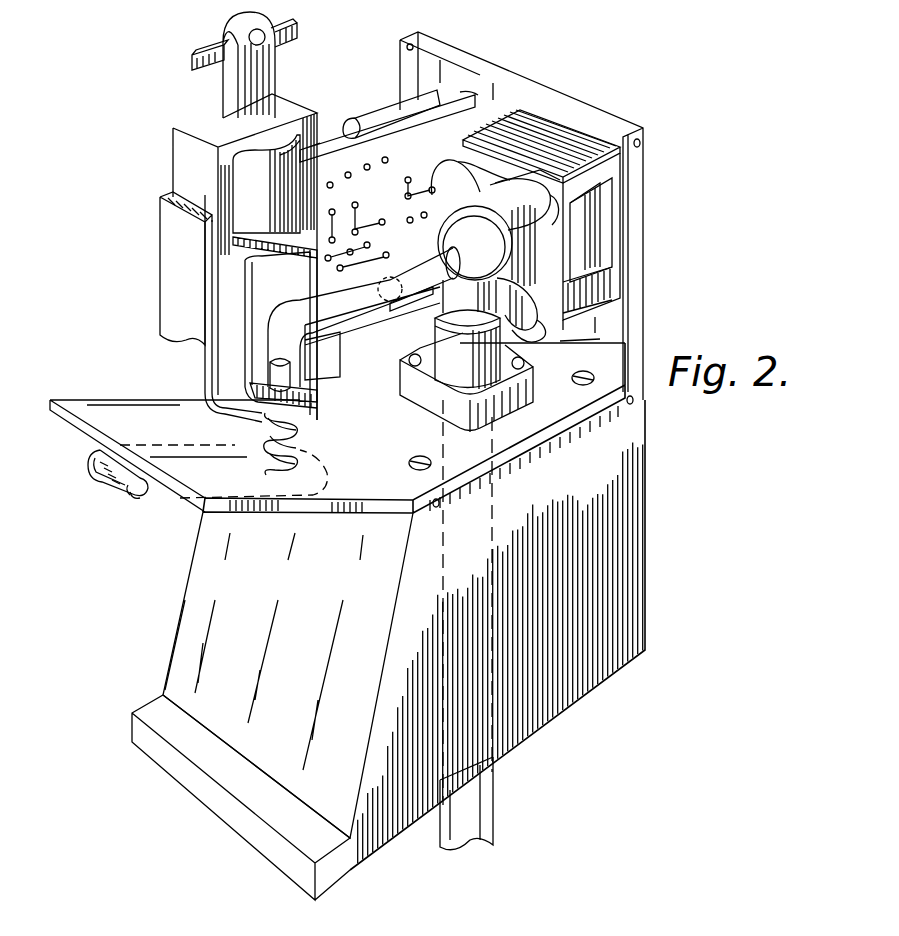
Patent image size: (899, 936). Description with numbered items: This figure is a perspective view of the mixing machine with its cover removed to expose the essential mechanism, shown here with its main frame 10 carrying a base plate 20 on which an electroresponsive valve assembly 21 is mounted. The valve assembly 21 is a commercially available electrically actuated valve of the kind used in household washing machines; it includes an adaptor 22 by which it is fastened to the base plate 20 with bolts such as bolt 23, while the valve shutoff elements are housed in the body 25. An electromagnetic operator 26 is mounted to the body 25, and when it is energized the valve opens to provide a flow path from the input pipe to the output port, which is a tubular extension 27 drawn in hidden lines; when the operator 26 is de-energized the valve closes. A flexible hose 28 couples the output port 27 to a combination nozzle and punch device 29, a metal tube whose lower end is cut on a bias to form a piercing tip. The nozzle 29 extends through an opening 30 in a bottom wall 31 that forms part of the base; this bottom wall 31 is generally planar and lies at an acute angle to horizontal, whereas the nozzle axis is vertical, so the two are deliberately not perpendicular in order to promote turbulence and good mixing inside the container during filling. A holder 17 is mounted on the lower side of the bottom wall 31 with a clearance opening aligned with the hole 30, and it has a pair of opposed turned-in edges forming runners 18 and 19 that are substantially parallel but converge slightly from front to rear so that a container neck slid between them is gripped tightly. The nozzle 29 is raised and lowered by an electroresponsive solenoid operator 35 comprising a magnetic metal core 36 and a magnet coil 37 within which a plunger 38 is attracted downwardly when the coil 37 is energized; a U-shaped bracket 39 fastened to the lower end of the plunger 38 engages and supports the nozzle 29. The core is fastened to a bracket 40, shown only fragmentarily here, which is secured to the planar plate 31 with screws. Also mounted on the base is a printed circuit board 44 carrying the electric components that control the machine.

The back mounting panel 10 is at (635, 245).
The holder 17 is at (85, 486).
The runner 18 is at (135, 496).
The runner 19 is at (113, 478).
The base plate 20 is at (600, 407).
The electroresponsive valve assembly 21 is at (600, 343).
The adaptor 22 is at (437, 400).
The bolt 23 is at (400, 365).
The body 25 is at (497, 190).
The electromagnetic operator 26 is at (580, 143).
The tubular extension 27 is at (494, 251).
The flexible hose 28 is at (300, 318).
The combination nozzle and punch device 29 is at (300, 417).
The opening 30 is at (300, 443).
The bottom wall 31 is at (127, 408).
The electroresponsive solenoid operator 35 is at (151, 158).
The magnetic metal core 36 is at (293, 100).
The magnet coil 37 is at (305, 148).
The plunger 38 is at (247, 90).
The U-shaped bracket 39 is at (210, 360).
The bracket 40 is at (160, 222).
The printed circuit board 44 is at (467, 90).